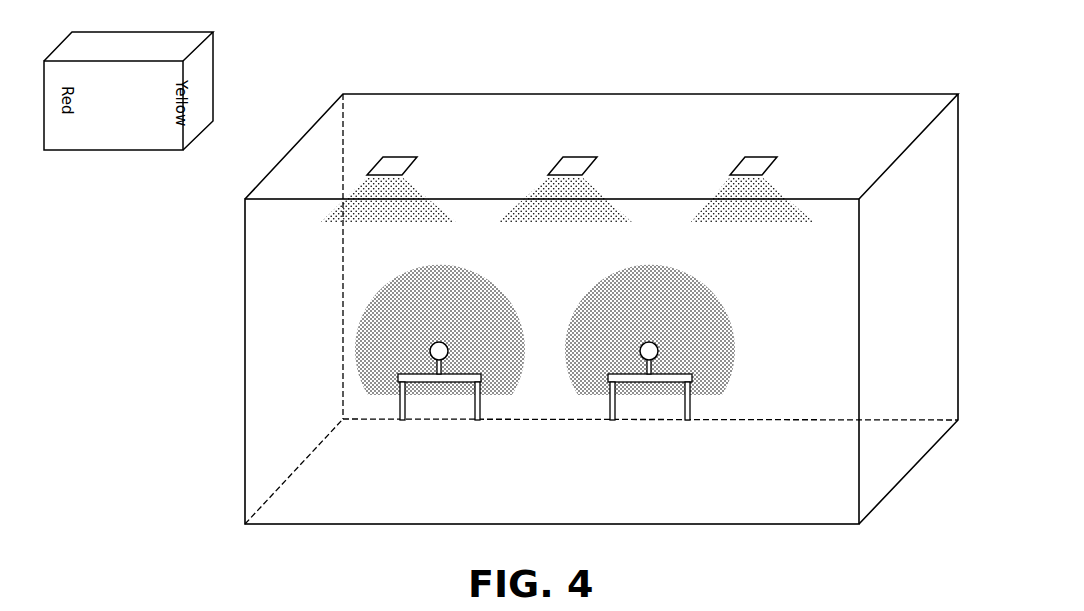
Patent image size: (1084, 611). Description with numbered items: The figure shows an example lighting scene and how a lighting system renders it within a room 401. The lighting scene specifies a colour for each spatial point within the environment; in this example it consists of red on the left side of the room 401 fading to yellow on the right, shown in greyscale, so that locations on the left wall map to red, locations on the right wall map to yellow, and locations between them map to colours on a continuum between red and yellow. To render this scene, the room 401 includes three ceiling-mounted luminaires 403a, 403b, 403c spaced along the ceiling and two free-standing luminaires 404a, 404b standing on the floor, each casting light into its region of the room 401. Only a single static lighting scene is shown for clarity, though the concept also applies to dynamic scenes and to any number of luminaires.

The room 401 is at (313, 78).
The ceiling-mounted luminaire 403a is at (414, 158).
The ceiling-mounted luminaire 403b is at (594, 158).
The ceiling-mounted luminaire 403c is at (775, 158).
The free-standing luminaire 404a is at (437, 342).
The free-standing luminaire 404b is at (647, 342).